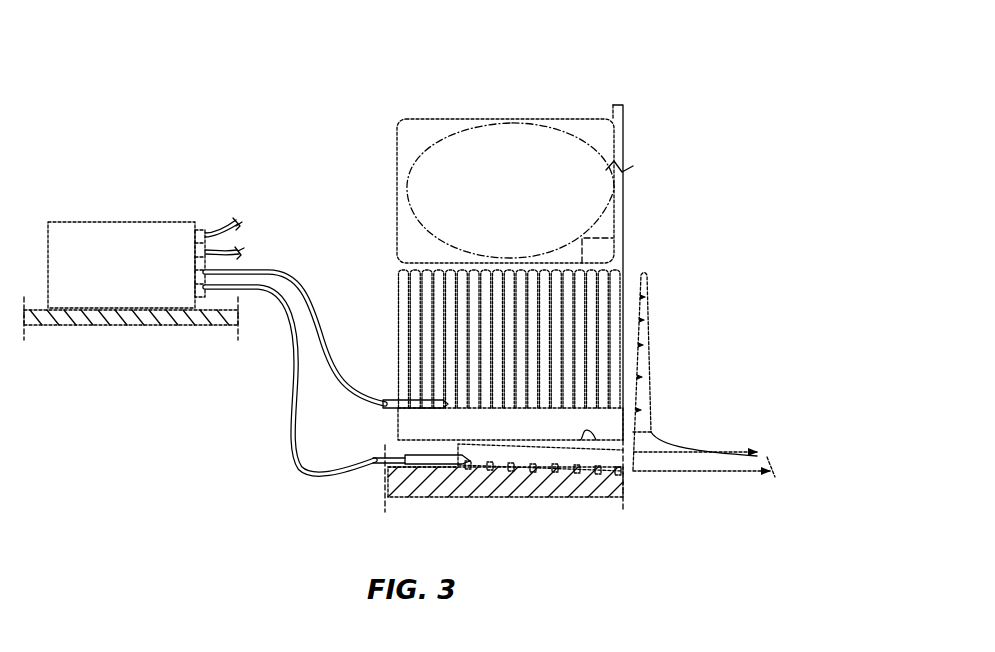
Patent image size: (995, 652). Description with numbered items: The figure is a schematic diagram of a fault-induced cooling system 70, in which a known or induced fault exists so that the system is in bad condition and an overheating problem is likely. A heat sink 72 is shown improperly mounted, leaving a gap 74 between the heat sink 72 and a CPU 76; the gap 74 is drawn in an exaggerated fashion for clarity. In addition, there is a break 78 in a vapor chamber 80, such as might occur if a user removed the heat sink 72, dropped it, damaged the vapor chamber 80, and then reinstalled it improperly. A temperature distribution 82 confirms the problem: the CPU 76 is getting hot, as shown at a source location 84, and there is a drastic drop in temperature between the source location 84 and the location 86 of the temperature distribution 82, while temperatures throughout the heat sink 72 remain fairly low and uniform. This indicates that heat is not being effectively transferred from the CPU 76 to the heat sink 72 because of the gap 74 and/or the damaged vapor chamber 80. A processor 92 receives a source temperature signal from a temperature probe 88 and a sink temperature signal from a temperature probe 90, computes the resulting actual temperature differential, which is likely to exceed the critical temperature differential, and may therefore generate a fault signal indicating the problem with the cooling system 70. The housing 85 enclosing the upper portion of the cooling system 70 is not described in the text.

The cooling system 70 is at (543, 70).
The heat sink 72 is at (400, 292).
The gap 74 is at (420, 449).
The CPU 76 is at (563, 462).
The break 78 is at (594, 434).
The vapor chamber 80 is at (505, 432).
The temperature distribution 82 is at (642, 390).
The source location 84 is at (778, 477).
The housing 85 is at (606, 145).
The location 86 is at (652, 432).
The temperature probe 88 is at (432, 466).
The temperature probe 90 is at (391, 404).
The processor 92 is at (133, 222).